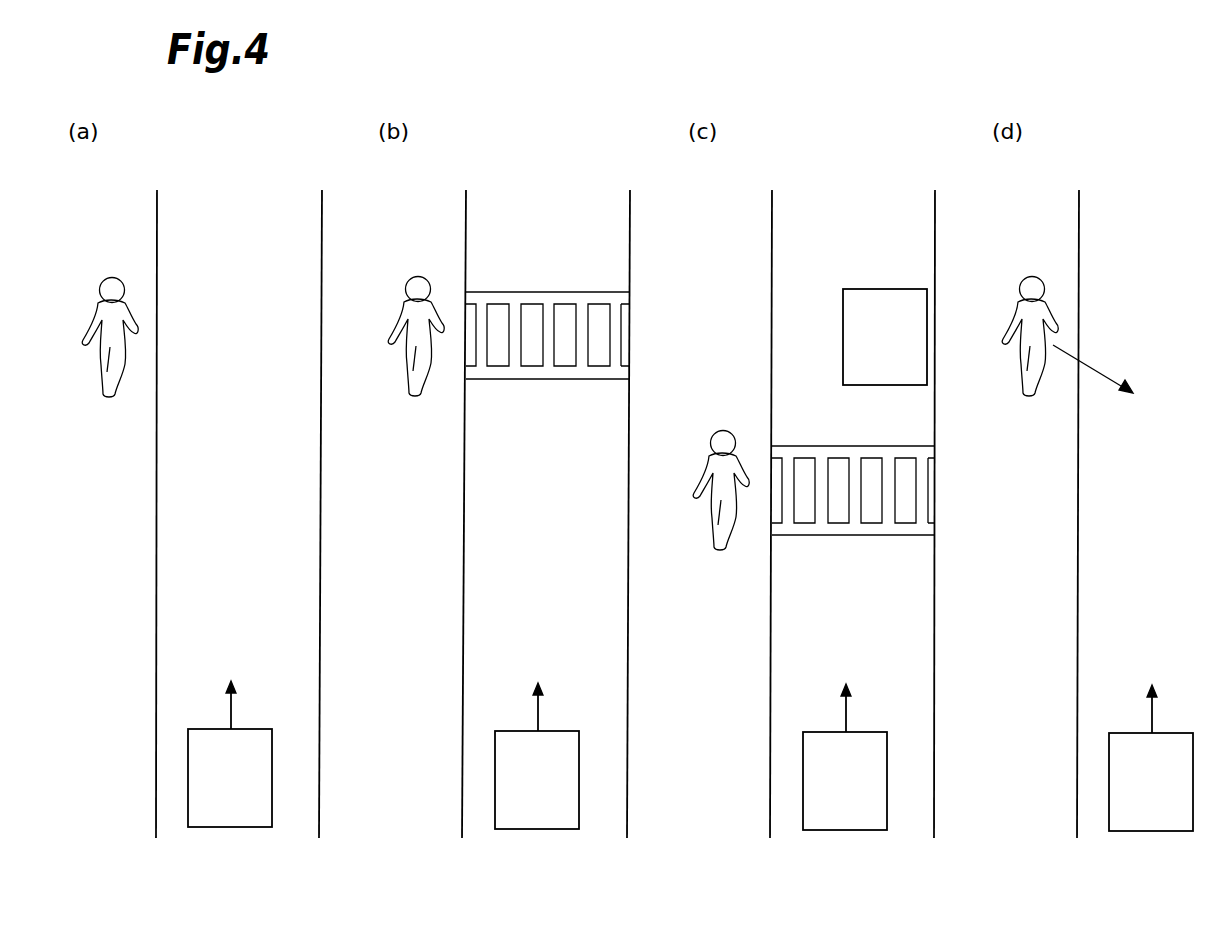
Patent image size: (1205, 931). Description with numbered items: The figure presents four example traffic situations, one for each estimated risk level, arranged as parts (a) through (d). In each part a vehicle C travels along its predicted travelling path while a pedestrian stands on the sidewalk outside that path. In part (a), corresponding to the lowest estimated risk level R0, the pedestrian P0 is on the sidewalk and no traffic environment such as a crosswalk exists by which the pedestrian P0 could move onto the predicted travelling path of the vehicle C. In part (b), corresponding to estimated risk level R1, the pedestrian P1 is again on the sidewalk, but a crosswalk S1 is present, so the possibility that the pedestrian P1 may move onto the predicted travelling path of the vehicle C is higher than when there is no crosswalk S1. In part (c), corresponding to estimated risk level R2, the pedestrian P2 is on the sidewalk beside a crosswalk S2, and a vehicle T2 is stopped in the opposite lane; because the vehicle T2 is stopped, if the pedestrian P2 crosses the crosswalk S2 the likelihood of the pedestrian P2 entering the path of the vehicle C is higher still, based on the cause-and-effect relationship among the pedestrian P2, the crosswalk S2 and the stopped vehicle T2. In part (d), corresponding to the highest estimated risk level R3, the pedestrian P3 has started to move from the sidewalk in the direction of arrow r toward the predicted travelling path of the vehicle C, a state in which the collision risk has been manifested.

The pedestrian P0 is at (112, 277).
The pedestrian P1 is at (418, 276).
The pedestrian P2 is at (723, 430).
The pedestrian P3 is at (1032, 276).
The estimated risk level R0 is at (239, 514).
The estimated risk level R1 is at (546, 514).
The estimated risk level R2 is at (852, 514).
The estimated risk level R3 is at (1120, 514).
The crosswalk S1 is at (498, 380).
The crosswalk S2 is at (805, 537).
The vehicle stopped in the opposite lane T2 is at (885, 289).
The arrow r is at (1098, 370).
The vehicle C is at (188, 785).